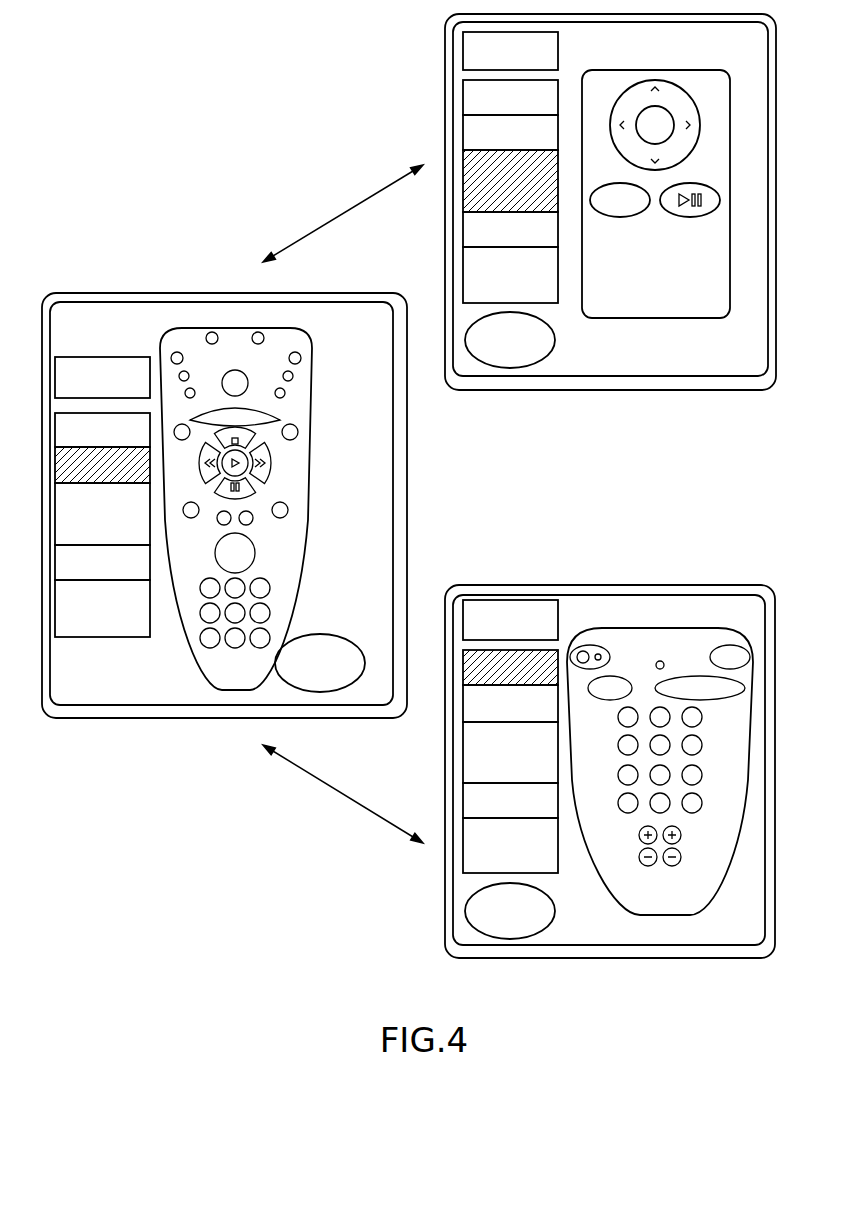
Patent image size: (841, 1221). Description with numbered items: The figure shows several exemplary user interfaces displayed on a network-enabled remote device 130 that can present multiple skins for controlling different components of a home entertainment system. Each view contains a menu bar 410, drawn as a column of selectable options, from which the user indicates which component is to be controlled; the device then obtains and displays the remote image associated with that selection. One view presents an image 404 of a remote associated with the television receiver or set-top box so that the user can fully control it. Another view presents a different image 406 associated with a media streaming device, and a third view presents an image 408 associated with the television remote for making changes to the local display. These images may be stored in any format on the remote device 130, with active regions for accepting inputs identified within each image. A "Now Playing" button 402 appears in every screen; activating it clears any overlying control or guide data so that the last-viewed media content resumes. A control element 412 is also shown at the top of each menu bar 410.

The remote device 130 is at (150, 718).
The "Now Playing" button 402 is at (321, 634).
The image 404 is at (312, 386).
The image 406 is at (675, 318).
The image 408 is at (727, 875).
The menu bar 410 is at (100, 656).
The control button 412 is at (118, 357).